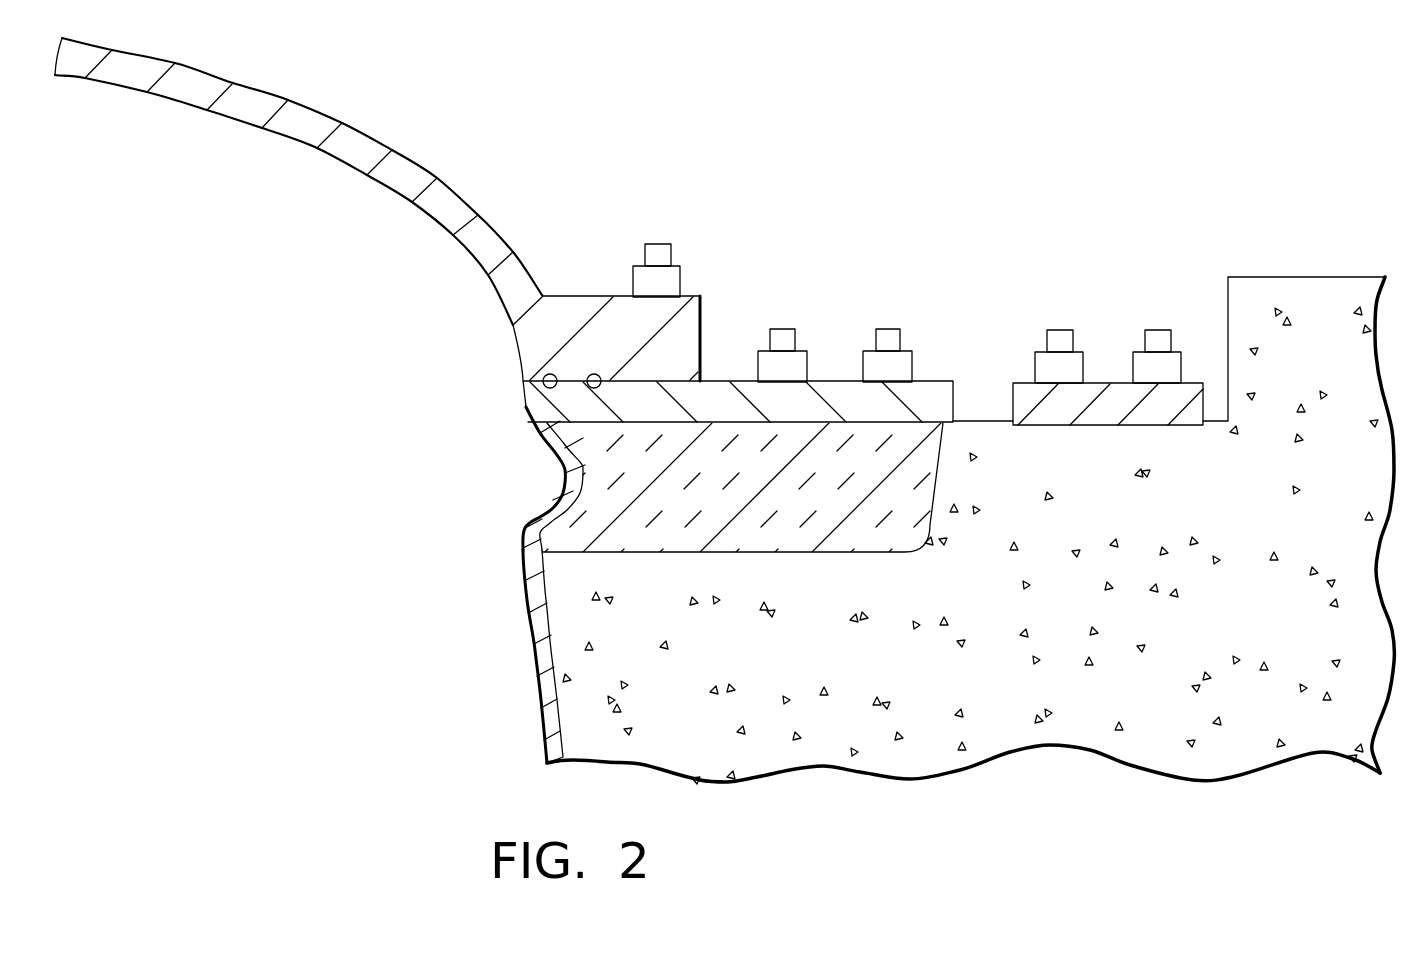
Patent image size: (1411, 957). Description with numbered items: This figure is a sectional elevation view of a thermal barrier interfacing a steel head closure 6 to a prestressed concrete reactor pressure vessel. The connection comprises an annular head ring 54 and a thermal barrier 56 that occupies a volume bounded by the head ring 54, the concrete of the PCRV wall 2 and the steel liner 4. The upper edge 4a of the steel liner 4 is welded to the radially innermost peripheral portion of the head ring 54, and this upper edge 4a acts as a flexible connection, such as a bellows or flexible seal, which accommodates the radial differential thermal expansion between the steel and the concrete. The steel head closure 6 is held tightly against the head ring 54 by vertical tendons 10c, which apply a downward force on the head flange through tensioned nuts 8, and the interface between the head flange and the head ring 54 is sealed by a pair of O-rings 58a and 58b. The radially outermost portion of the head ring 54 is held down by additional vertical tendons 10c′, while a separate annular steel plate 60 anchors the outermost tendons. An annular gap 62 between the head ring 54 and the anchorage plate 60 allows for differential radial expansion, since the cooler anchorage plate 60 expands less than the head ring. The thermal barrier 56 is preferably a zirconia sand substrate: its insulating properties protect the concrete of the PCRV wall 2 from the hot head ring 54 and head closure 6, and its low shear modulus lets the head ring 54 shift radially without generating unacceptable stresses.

The PCRV wall 2 is at (597, 700).
The steel liner 4 is at (540, 630).
The upper edge of steel liner 4a is at (563, 483).
The steel head closure 6 is at (448, 202).
The tensioned nuts 8 is at (683, 277).
The vertical tendons 10c is at (660, 244).
The additional vertical tendons 10c′ is at (870, 277).
The head ring 54 is at (843, 388).
The thermal barrier 56 is at (622, 538).
The O-ring 58a is at (541, 382).
The O-ring 58b is at (587, 379).
The annular steel plate 60 is at (1192, 383).
The annular gap 62 is at (982, 396).